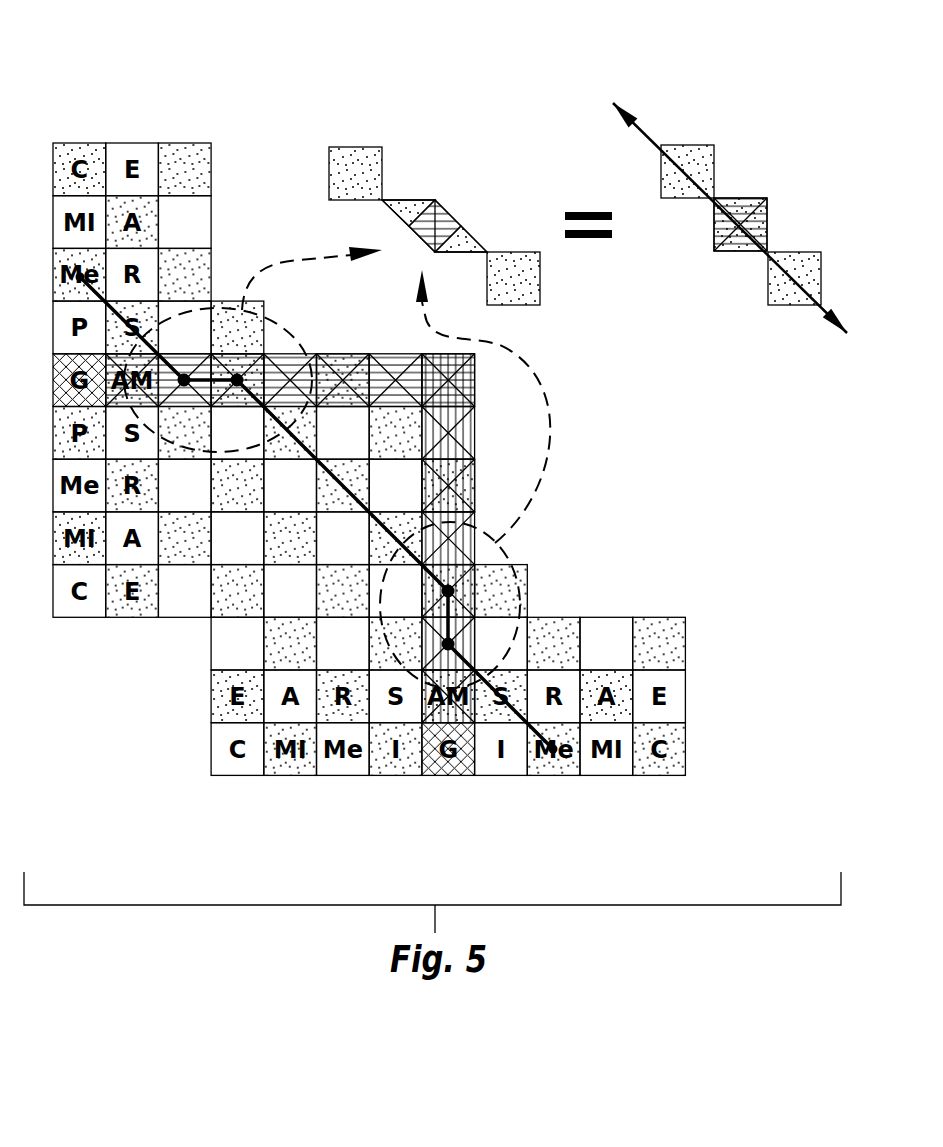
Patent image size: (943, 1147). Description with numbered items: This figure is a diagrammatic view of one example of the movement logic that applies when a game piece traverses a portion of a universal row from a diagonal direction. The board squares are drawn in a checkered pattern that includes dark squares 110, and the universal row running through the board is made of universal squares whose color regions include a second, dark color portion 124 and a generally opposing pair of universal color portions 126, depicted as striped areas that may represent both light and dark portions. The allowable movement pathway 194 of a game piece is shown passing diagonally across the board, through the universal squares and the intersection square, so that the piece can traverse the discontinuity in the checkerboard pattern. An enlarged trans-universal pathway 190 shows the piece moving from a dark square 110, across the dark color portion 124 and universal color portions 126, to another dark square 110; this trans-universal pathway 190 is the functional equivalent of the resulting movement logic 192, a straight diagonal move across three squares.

The dark square 110 is at (330, 166).
The second color portion 124 is at (410, 203).
The universal color portions 126 is at (447, 218).
The trans-universal pathway 190 is at (422, 166).
The resulting movement logic 192 is at (786, 157).
The allowable movement pathway 194 is at (357, 495).